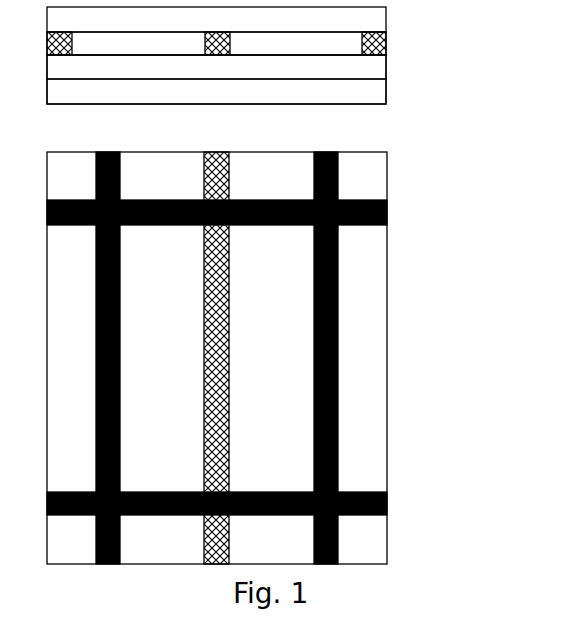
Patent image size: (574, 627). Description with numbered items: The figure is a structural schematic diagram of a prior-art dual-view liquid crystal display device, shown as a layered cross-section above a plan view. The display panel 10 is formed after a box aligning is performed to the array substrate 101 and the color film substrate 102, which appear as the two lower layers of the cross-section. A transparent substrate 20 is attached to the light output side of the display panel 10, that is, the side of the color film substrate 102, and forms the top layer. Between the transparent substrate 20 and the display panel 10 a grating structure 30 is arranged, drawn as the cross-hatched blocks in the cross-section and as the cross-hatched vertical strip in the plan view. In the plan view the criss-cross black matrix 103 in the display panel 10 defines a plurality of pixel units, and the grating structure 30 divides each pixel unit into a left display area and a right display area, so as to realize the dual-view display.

The display panel 10 is at (448, 60).
The transparent substrate 20 is at (386, 19).
The grating structure 30 is at (386, 43).
The array substrate 101 is at (386, 91).
The color film substrate 102 is at (386, 68).
The black matrix 103 is at (338, 297).